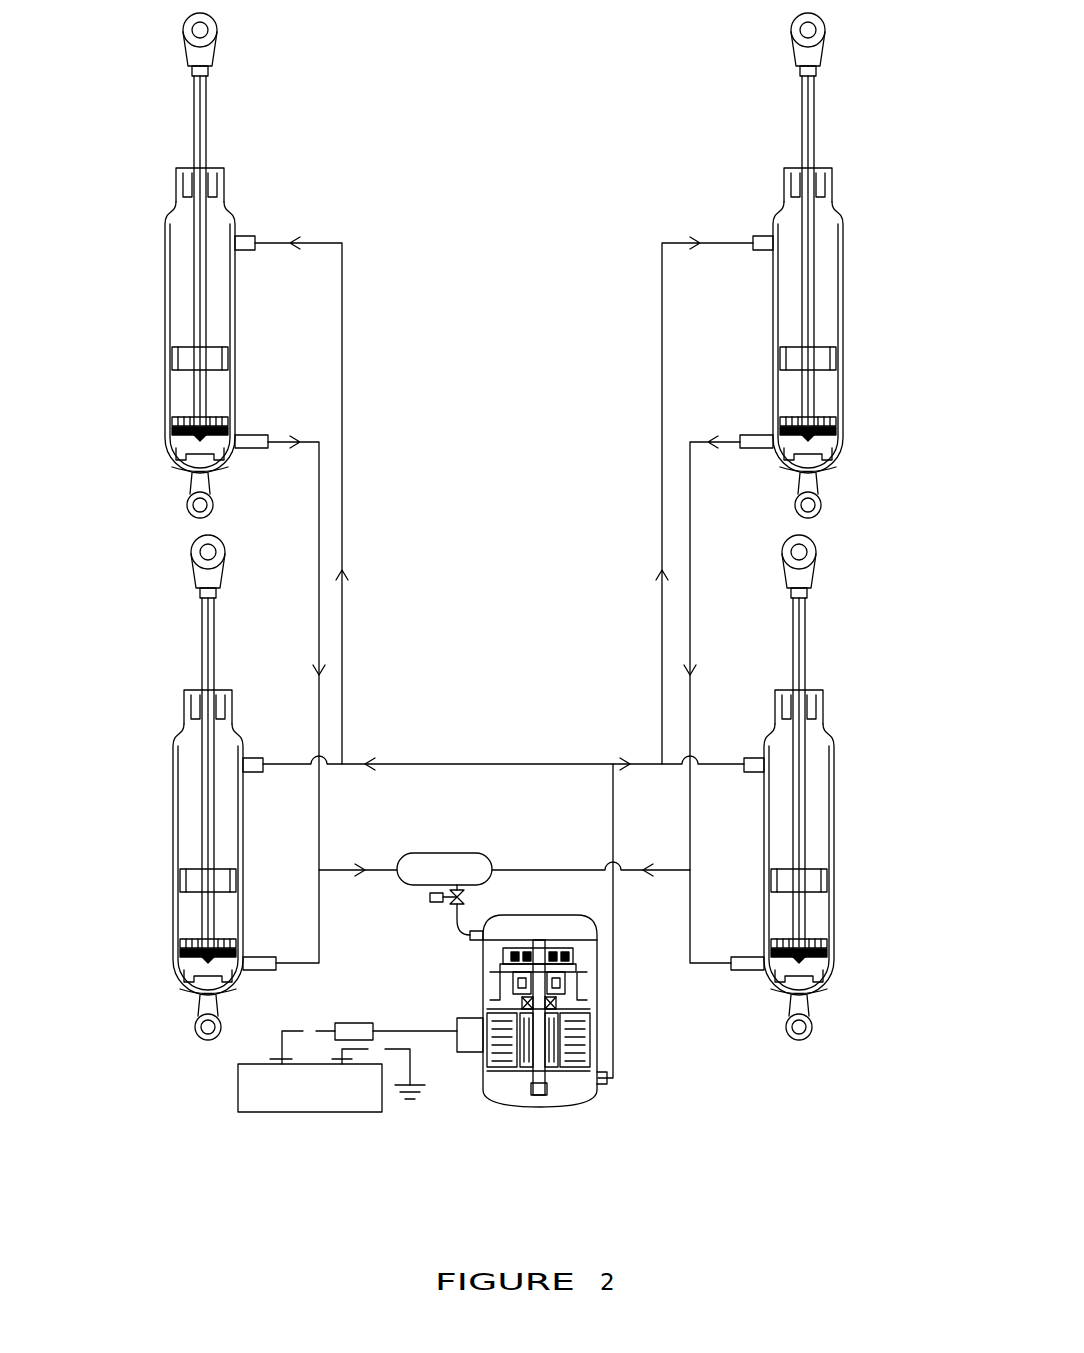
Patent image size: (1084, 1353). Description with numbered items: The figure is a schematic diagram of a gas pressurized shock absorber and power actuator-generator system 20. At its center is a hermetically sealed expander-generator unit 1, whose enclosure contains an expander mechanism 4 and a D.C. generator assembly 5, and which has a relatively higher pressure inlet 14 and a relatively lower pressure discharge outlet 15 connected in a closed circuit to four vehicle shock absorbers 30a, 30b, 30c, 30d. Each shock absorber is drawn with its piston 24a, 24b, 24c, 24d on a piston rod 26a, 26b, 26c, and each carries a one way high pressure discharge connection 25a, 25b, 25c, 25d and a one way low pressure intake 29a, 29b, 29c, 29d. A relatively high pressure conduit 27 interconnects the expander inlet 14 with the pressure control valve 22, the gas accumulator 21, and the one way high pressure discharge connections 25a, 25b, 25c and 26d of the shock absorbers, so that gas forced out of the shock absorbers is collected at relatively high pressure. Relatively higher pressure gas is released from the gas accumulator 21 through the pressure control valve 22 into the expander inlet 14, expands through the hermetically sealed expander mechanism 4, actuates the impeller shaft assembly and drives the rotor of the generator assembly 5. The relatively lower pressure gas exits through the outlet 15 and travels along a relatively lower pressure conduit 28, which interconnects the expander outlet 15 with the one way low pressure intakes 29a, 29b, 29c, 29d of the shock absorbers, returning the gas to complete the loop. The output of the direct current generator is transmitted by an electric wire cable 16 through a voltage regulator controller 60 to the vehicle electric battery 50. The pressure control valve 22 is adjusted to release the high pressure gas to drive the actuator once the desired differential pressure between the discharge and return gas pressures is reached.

The compressor 1 is at (548, 1011).
The expander mechanism 4 is at (553, 940).
The D.C. generator assembly 5 is at (583, 1005).
The higher pressure inlet 14 is at (471, 943).
The lower pressure discharge outlet 15 is at (604, 1092).
The electric wire cable 16 is at (432, 1031).
The system 20 is at (317, 1124).
The gas accumulator 21 is at (446, 853).
The pressure control valve 22 is at (437, 905).
The piston 24a is at (188, 342).
The piston 24b is at (198, 866).
The piston 24c is at (822, 345).
The piston 24d is at (810, 866).
The one way high pressure discharge connection 25a is at (253, 434).
The one way high pressure discharge connection 25b is at (255, 955).
The one way high pressure discharge connection 25c is at (760, 434).
The lower port 25d is at (738, 955).
The piston rod 26a is at (193, 235).
The piston rod 26b is at (198, 815).
The piston rod 26c is at (818, 235).
The one way high pressure discharge connection 26d is at (808, 790).
The relatively high pressure conduit 27 is at (318, 536).
The relatively lower pressure conduit 28 is at (346, 600).
The one way low pressure intake 29a is at (246, 238).
The one way low pressure intake 29b is at (253, 758).
The one way low pressure intake 29c is at (762, 238).
The one way low pressure intake 29d is at (750, 758).
The shock absorber 30a is at (187, 265).
The shock absorber 30b is at (816, 279).
The shock absorber 30c is at (192, 797).
The shock absorber 30d is at (820, 799).
The vehicle electric battery 50 is at (238, 1090).
The voltage regulator controller 60 is at (340, 1023).